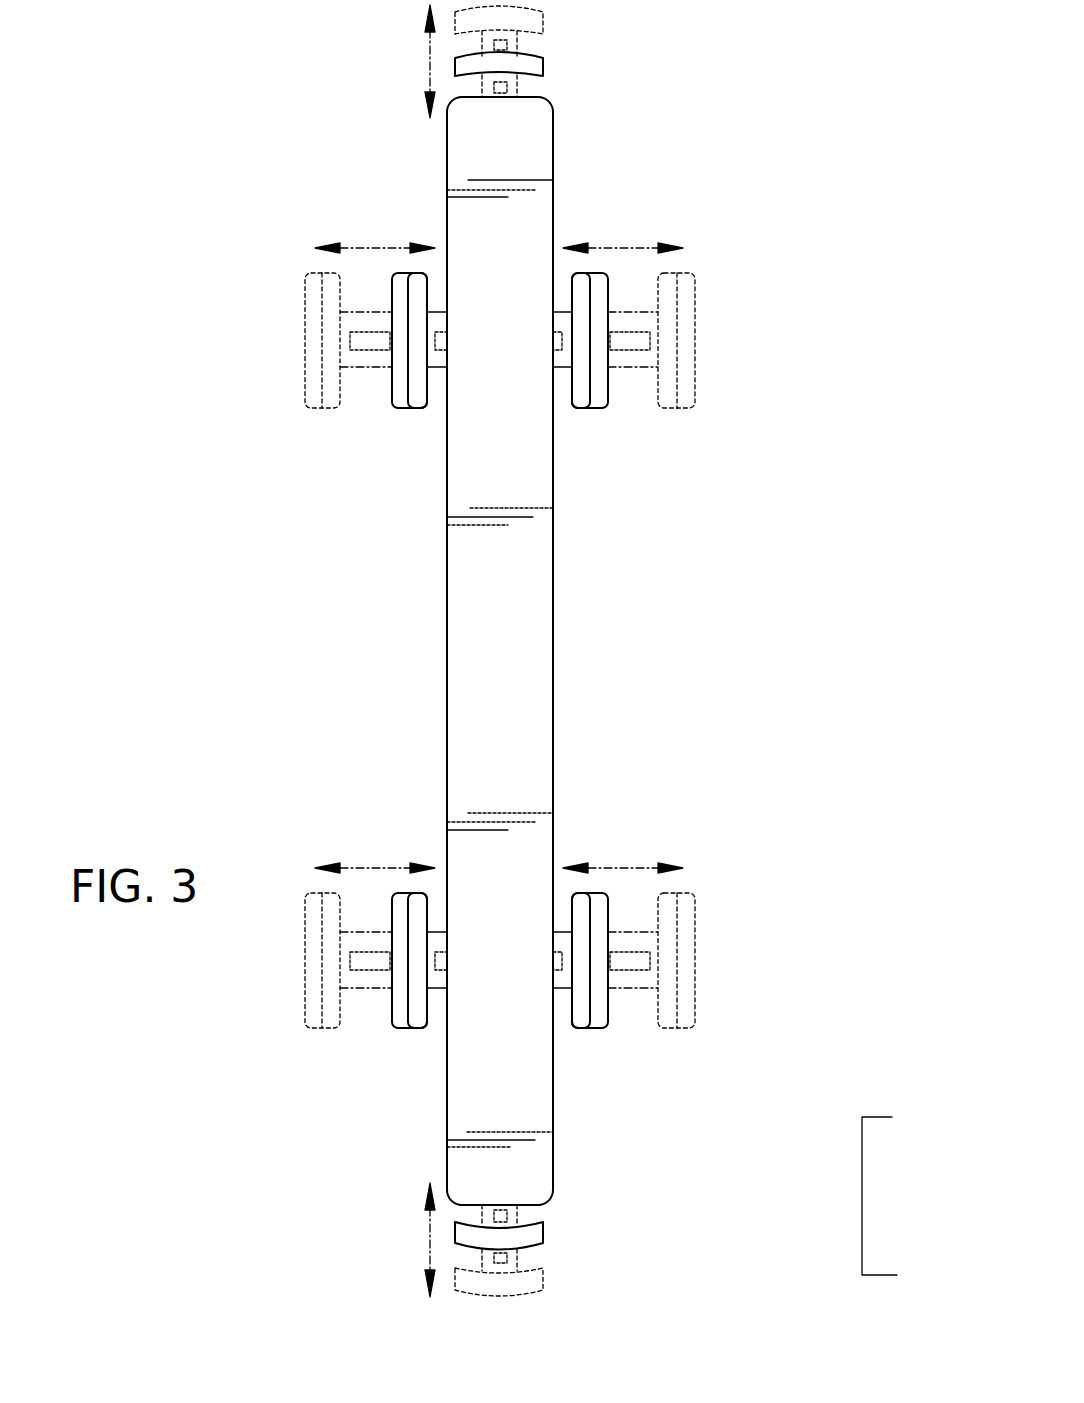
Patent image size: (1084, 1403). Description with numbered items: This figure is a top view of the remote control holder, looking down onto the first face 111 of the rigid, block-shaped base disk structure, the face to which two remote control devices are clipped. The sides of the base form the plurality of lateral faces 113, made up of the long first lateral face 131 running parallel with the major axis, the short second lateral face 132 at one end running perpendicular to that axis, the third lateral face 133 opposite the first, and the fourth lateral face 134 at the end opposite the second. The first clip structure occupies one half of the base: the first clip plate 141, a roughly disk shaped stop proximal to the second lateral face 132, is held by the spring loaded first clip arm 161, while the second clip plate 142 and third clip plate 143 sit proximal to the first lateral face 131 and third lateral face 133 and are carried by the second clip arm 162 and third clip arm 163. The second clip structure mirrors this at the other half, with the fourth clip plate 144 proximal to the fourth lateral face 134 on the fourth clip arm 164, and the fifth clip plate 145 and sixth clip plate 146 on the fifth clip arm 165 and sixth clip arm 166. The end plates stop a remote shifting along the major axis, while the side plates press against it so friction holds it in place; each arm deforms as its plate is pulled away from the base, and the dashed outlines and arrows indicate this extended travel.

The first face 111 is at (518, 732).
The plurality of lateral faces 113 is at (862, 1197).
The first lateral face 131 is at (530, 692).
The second lateral face 132 is at (504, 118).
The third lateral face 133 is at (472, 506).
The fourth lateral face 134 is at (520, 1182).
The first clip plate 141 is at (527, 62).
The second clip plate 142 is at (598, 402).
The third clip plate 143 is at (313, 310).
The fourth clip plate 144 is at (535, 1238).
The fifth clip plate 145 is at (597, 907).
The sixth clip plate 146 is at (317, 975).
The first clip arm 161 is at (515, 87).
The second clip arm 162 is at (560, 363).
The third clip arm 163 is at (363, 362).
The fourth clip arm 164 is at (513, 1222).
The fifth clip arm 165 is at (560, 987).
The sixth clip arm 166 is at (365, 983).